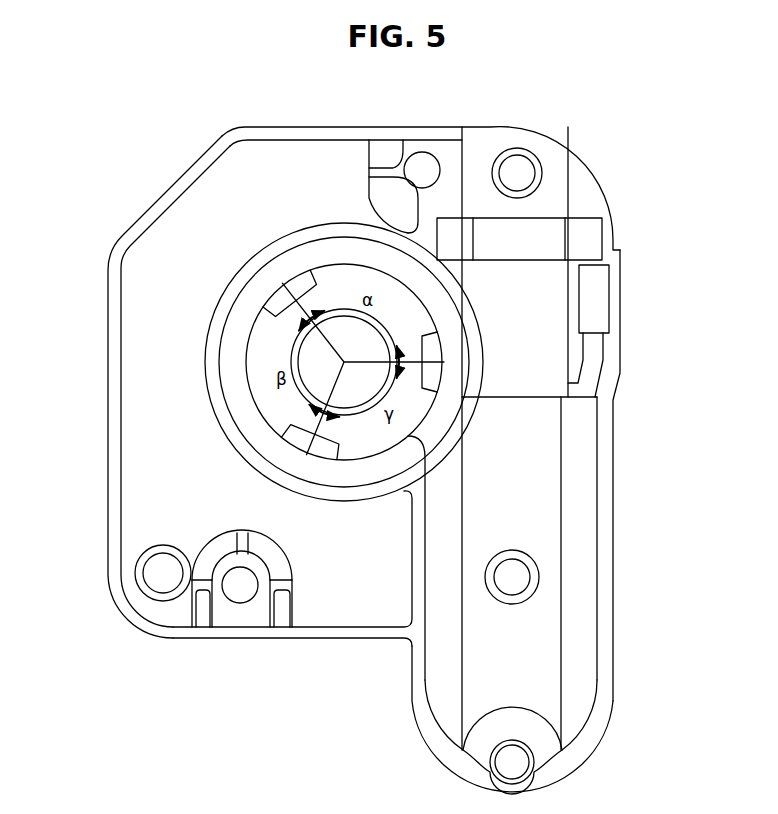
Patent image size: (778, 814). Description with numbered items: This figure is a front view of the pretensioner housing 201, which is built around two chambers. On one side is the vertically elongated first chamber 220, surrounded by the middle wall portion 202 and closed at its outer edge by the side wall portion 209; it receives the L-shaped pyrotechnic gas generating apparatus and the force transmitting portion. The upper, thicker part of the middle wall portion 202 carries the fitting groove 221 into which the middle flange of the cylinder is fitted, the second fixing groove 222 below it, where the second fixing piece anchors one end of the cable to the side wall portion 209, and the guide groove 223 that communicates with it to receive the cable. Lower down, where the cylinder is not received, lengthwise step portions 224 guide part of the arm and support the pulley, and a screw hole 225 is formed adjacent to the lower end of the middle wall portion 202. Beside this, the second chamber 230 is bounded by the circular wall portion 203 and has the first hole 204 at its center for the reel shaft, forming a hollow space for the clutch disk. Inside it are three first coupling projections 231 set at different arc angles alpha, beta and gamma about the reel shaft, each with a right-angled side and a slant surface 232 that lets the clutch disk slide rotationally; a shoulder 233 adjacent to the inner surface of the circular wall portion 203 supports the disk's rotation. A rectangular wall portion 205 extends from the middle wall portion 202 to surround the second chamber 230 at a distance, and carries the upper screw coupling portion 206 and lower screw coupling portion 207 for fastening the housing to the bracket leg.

The housing 201 is at (356, 128).
The middle wall portion 202 is at (418, 523).
The circular wall portion 203 is at (217, 392).
The first hole 204 is at (320, 370).
The rectangular wall portion 205 is at (110, 311).
The screw coupling portion 206 is at (429, 162).
The screw coupling portion 207 is at (231, 603).
The side wall portion 209 is at (607, 578).
The first chamber 220 is at (513, 386).
The fitting groove 221 is at (602, 247).
The second fixing groove 222 is at (608, 305).
The guide groove 223 is at (605, 380).
The step portions 224 is at (443, 630).
The screw hole 225 is at (518, 753).
The second chamber 230 is at (370, 282).
The first coupling projections 231 is at (333, 296).
The slant surface 232 is at (305, 285).
The shoulder 233 is at (238, 283).